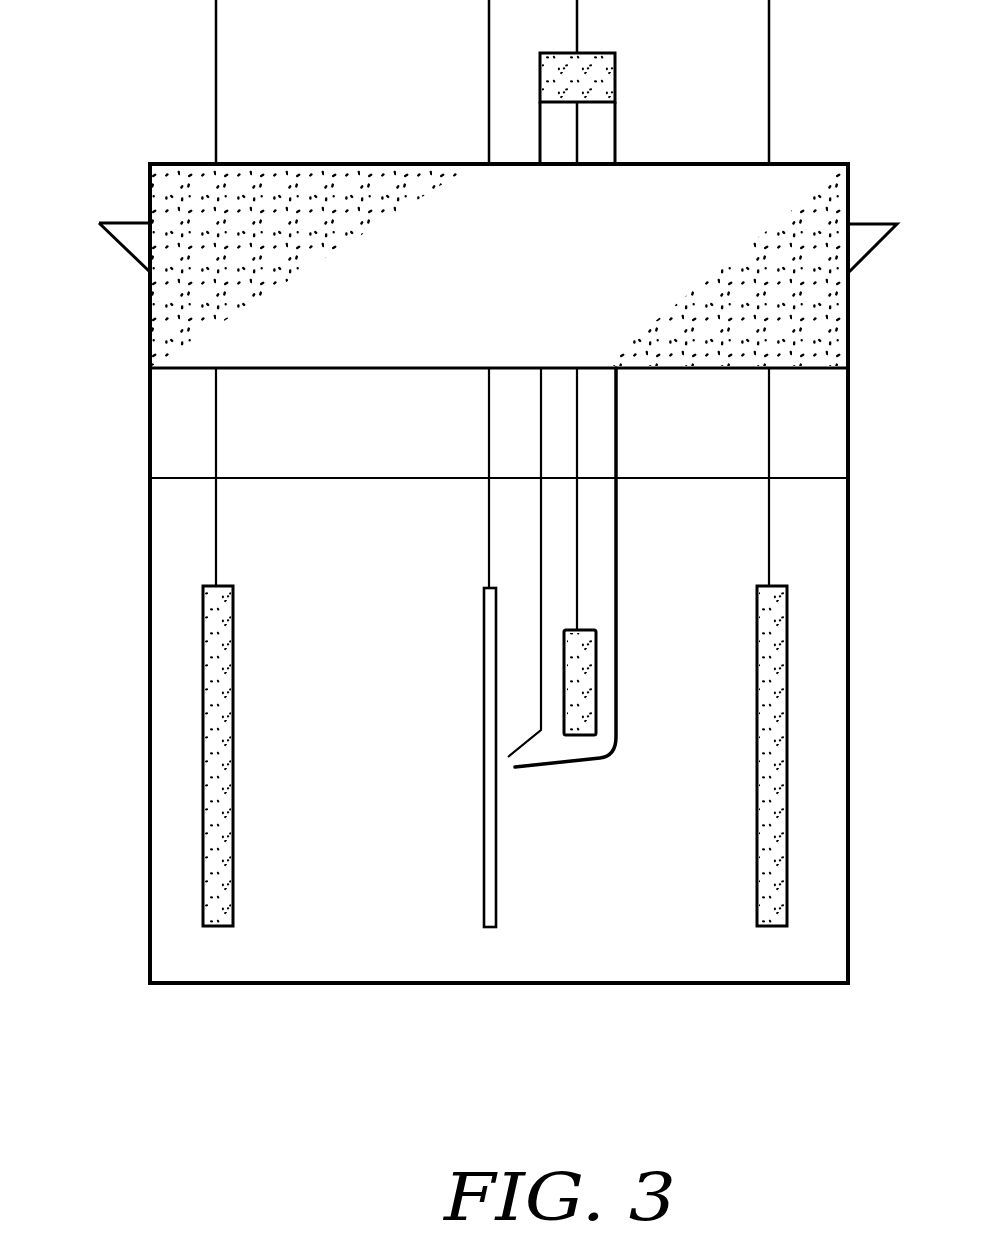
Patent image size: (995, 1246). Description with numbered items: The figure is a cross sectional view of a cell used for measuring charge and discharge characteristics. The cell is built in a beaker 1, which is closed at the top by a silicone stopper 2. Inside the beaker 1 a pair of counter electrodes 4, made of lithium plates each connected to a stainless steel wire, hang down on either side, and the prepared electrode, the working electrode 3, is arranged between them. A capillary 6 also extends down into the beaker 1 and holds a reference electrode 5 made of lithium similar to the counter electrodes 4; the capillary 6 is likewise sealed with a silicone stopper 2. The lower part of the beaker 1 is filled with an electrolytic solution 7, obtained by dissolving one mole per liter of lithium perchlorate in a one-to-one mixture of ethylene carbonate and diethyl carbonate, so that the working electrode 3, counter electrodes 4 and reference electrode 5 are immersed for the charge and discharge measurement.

The beaker 1 is at (150, 410).
The silicone stopper 2 is at (688, 178).
The electrode (working electrode) 3 is at (487, 860).
The counter electrodes 4 is at (210, 697).
The reference electrode 5 is at (588, 710).
The capillary 6 is at (617, 562).
The electrolytic solution 7 is at (362, 795).